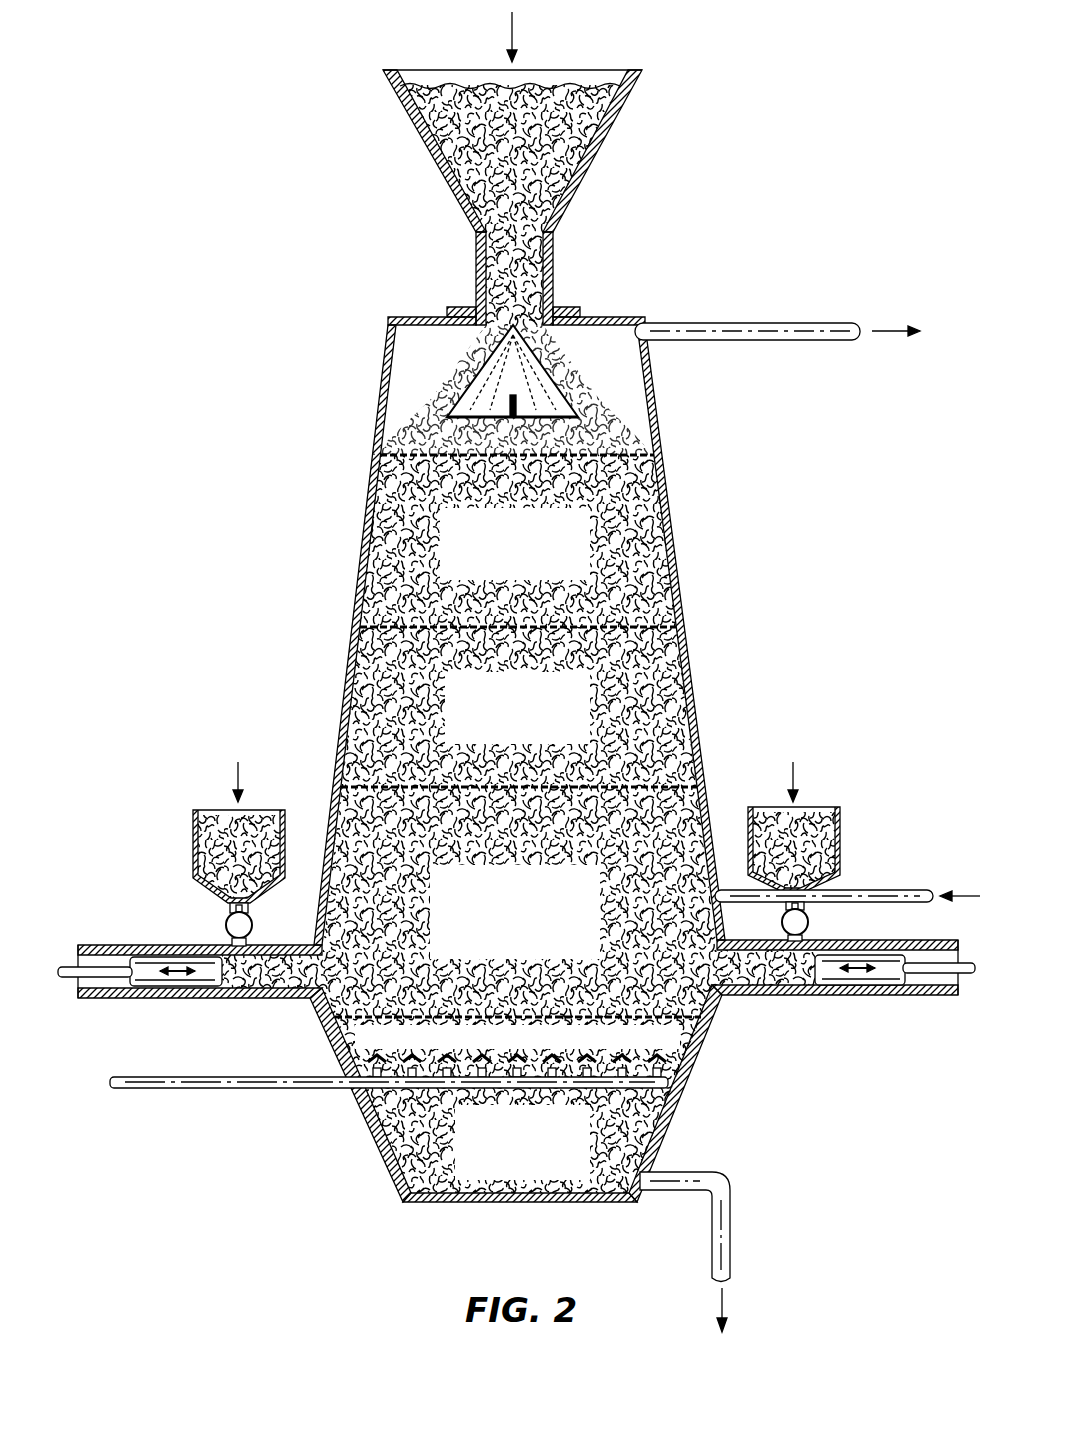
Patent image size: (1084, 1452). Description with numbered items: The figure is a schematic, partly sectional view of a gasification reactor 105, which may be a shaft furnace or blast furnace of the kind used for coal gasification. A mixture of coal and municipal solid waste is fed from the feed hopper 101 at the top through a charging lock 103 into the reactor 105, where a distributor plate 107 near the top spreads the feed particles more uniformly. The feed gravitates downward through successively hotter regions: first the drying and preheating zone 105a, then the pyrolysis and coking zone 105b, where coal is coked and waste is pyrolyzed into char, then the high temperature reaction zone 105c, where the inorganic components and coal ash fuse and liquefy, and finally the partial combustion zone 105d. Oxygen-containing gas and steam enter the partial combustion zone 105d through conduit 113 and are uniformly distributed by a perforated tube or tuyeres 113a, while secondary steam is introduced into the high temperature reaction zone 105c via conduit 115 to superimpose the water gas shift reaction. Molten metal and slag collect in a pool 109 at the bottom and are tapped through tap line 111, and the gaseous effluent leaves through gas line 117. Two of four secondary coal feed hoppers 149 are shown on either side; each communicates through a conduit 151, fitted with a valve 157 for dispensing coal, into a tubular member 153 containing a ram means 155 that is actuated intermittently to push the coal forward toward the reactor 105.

The feed hopper 101 is at (604, 140).
The charging lock 103 is at (553, 262).
The reactor 105 is at (362, 530).
The drying and preheating zone 105a is at (655, 557).
The pyrolysis and coking zone 105b is at (672, 672).
The high temperature reaction zone 105c is at (355, 828).
The partial combustion zone 105d is at (683, 1045).
The distributor plate 107 is at (470, 385).
The pool 109 is at (458, 1195).
The tap line 111 is at (730, 1220).
The conduit 113 is at (215, 1090).
The perforated tube or tuyeres 113a is at (420, 1095).
The conduit 115 is at (882, 892).
The gas line 117 is at (724, 330).
The secondary coal feed hopper 149 is at (193, 832).
The conduit 151 is at (228, 942).
The tubular member 153 is at (283, 975).
The ram means 155 is at (198, 990).
The valve 157 is at (253, 925).